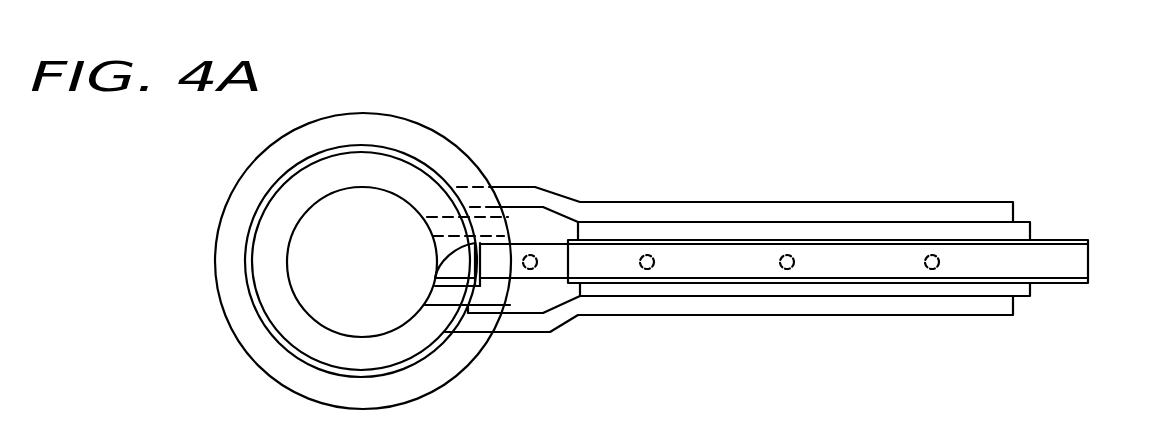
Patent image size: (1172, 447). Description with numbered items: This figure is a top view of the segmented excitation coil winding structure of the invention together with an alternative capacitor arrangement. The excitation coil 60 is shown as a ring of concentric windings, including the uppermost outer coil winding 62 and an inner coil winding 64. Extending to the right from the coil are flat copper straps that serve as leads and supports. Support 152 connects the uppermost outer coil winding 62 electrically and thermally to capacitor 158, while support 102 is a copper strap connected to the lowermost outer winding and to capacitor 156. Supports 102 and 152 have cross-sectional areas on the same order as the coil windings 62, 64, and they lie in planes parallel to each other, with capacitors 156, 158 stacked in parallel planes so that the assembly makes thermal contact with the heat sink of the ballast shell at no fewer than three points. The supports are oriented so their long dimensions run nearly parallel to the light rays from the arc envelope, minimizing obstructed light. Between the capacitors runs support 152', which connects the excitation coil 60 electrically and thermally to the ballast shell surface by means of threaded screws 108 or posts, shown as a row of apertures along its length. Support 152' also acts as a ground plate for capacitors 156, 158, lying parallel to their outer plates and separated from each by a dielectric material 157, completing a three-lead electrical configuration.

The excitation coil 60 is at (483, 154).
The uppermost outer coil winding 62 is at (372, 128).
The coil winding 64 is at (313, 191).
The support 102 is at (537, 196).
The threaded screws 108 is at (537, 256).
The support 152 is at (538, 295).
The support 152' is at (497, 321).
The capacitor 156 is at (1018, 216).
The dielectric material 157 is at (1078, 284).
The capacitor 158 is at (1019, 306).